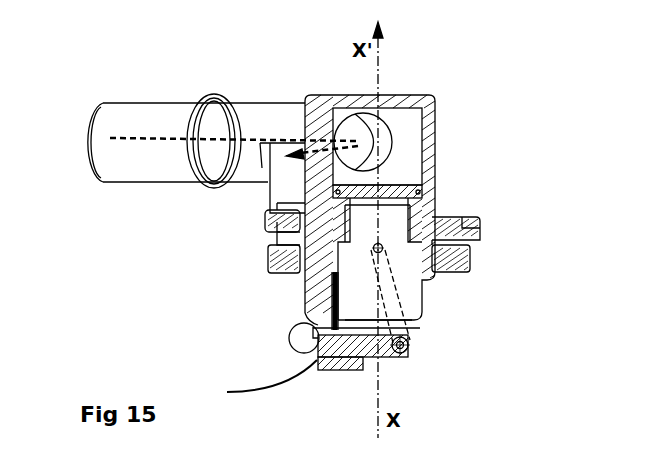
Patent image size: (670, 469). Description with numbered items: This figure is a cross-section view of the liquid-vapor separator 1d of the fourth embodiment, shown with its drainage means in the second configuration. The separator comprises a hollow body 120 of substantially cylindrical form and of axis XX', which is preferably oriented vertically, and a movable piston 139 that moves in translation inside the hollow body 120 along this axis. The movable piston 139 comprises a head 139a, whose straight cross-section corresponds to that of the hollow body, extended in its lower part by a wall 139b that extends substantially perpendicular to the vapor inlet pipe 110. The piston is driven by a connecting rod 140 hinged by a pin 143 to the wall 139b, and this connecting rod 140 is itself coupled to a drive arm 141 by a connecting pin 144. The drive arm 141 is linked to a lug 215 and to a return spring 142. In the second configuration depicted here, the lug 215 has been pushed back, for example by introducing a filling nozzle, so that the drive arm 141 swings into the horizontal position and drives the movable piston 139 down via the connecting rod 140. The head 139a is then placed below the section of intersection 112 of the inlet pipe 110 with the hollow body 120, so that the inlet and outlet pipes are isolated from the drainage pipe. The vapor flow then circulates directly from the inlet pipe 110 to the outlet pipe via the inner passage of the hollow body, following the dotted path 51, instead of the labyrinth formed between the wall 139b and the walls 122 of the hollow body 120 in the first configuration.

The liquid-vapor separator 1d is at (290, 80).
The path 51 is at (237, 133).
The vapor inlet pipe 110 is at (107, 153).
The section of intersection 112 is at (386, 122).
The hollow body 120 is at (405, 127).
The walls of the hollow body 122 is at (428, 157).
The movable piston 139 is at (420, 322).
The head 139a is at (405, 190).
The wall 139b is at (357, 278).
The connecting rod 140 is at (393, 302).
The drive arm 141 is at (367, 348).
The return spring 142 is at (297, 348).
The pin 143 is at (382, 245).
The connecting pin 144 is at (410, 348).
The lug 215 is at (270, 387).